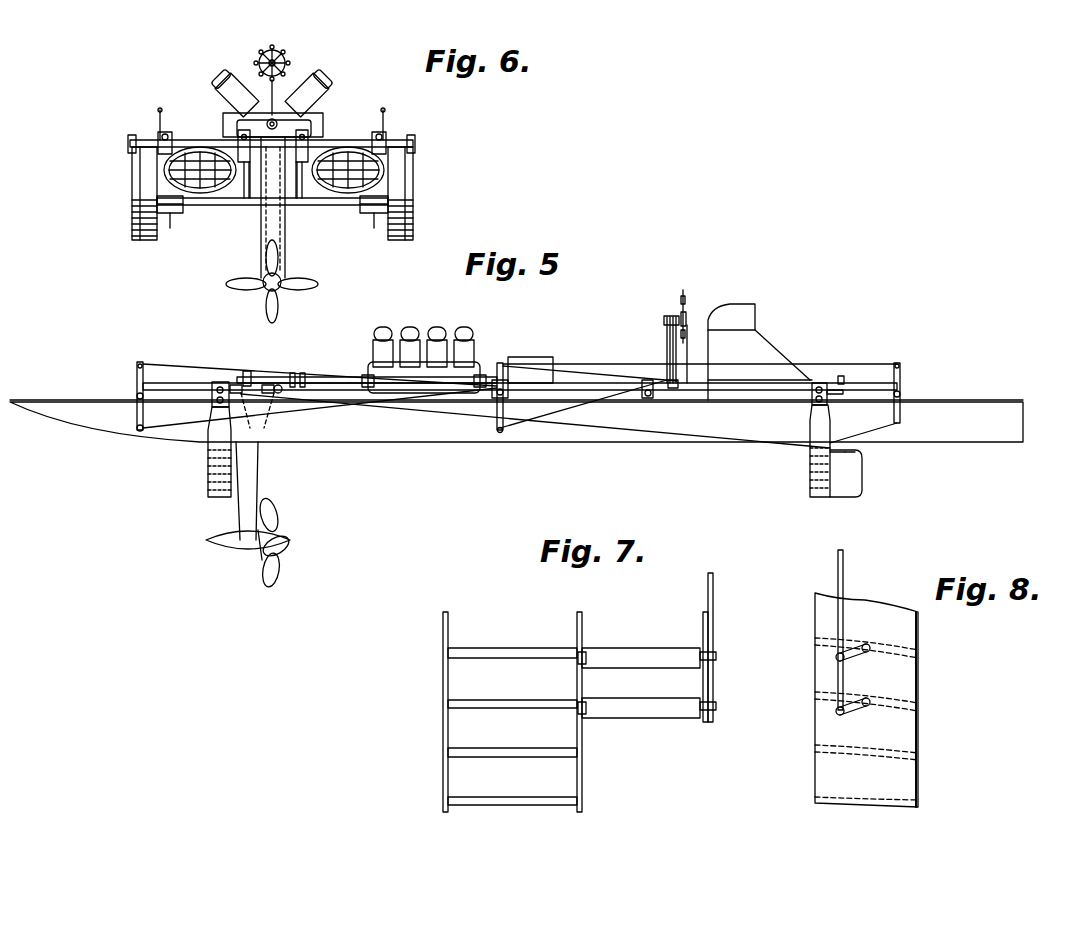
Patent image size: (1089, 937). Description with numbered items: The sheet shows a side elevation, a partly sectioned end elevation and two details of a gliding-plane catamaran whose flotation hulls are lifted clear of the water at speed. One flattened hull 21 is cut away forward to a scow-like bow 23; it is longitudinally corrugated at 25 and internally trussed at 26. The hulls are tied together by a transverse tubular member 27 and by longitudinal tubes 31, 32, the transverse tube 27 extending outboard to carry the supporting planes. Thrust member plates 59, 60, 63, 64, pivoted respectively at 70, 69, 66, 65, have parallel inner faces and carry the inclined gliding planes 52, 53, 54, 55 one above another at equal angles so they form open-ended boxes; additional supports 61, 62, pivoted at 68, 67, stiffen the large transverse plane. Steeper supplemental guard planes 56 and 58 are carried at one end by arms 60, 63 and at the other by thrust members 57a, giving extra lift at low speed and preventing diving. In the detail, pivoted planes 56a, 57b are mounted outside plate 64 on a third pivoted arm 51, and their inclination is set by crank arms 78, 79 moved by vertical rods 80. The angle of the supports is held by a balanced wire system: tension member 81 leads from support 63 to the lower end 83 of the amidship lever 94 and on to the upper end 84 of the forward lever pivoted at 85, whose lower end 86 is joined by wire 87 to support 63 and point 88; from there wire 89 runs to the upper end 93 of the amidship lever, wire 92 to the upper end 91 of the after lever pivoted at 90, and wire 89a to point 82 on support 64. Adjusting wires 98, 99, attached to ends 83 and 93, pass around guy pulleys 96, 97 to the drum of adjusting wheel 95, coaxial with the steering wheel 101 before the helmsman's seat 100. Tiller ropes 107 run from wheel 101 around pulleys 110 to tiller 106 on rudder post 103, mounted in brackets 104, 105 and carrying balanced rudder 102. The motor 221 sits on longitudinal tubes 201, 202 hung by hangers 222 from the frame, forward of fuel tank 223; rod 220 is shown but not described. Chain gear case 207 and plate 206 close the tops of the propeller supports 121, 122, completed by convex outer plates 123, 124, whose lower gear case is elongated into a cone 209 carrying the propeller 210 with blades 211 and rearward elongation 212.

In FIG. 5, the hull 21 is at (430, 404).
In FIG. 5, the scow-like bow 23 is at (70, 431).
In FIG. 6, the longitudinal corrugations 25 is at (272, 180).
In FIG. 6, the internal trussing 26 is at (198, 158).
In FIG. 6, the transverse member 27 is at (330, 140).
In FIG. 6, the longitudinal member 31 is at (388, 128).
In FIG. 5, the longitudinal member 31 is at (752, 392).
In FIG. 6, the longitudinal member 32 is at (165, 120).
In FIG. 7, the pivoted arm 51 is at (703, 627).
In FIG. 7, the gliding plane 52 is at (540, 790).
In FIG. 8, the gliding plane 52 is at (905, 800).
In FIG. 7, the gliding plane 53 is at (496, 752).
In FIG. 8, the gliding plane 53 is at (905, 748).
In FIG. 7, the gliding plane 54 is at (492, 702).
In FIG. 8, the gliding plane 54 is at (905, 698).
In FIG. 7, the gliding plane 55 is at (500, 650).
In FIG. 8, the gliding plane 55 is at (905, 646).
In FIG. 6, the supplemental plane 56 is at (172, 226).
In FIG. 7, the pivoted plane 56a is at (620, 705).
In FIG. 6, the thrust member 57a is at (183, 208).
In FIG. 7, the pivoted plane 57b is at (635, 642).
In FIG. 6, the supplemental plane 58 is at (298, 205).
In FIG. 6, the thrust member plate 59 is at (132, 183).
In FIG. 6, the thrust member arm 60 is at (148, 193).
In FIG. 6, the additional support 61 is at (253, 180).
In FIG. 6, the additional support 62 is at (293, 180).
In FIG. 6, the thrust member arm 63 is at (400, 193).
In FIG. 7, the thrust member arm 63 is at (450, 643).
In FIG. 6, the thrust member plate 64 is at (413, 185).
In FIG. 5, the thrust member plate 64 is at (212, 478).
In FIG. 7, the thrust member plate 64 is at (577, 628).
In FIG. 6, the pivot 65 is at (414, 146).
In FIG. 6, the pivot 66 is at (385, 148).
In FIG. 6, the pivot 67 is at (295, 149).
In FIG. 6, the pivot 68 is at (250, 149).
In FIG. 6, the pivot 69 is at (162, 150).
In FIG. 6, the pivot 70 is at (130, 147).
In FIG. 7, the crank arm 78 is at (717, 657).
In FIG. 8, the crank arm 78 is at (852, 655).
In FIG. 7, the crank arm 79 is at (717, 706).
In FIG. 8, the crank arm 79 is at (852, 712).
In FIG. 7, the vertical rod 80 is at (714, 600).
In FIG. 8, the vertical rod 80 is at (846, 582).
In FIG. 5, the tension member 81 is at (400, 436).
In FIG. 5, the connection point 82 is at (814, 450).
In FIG. 5, the lower end of amidship lever 83 is at (492, 439).
In FIG. 5, the upper end of forward lever 84 is at (142, 358).
In FIG. 5, the pivot 85 is at (136, 396).
In FIG. 5, the lower end of forward lever 86 is at (136, 428).
In FIG. 5, the wire 87 is at (175, 440).
In FIG. 5, the connection point 88 is at (214, 455).
In FIG. 5, the wire 89 is at (320, 413).
In FIG. 5, the wire 89a is at (888, 432).
In FIG. 5, the pivot 90 is at (900, 394).
In FIG. 5, the upper end of after lever 91 is at (899, 365).
In FIG. 5, the wire 92 is at (700, 353).
In FIG. 5, the upper end of amidship lever 93 is at (503, 365).
In FIG. 5, the amidship arm 94 is at (503, 398).
In FIG. 6, the adjusting wheel 95 is at (259, 50).
In FIG. 5, the adjusting wheel 95 is at (680, 309).
In FIG. 5, the guy pulley 96 is at (676, 388).
In FIG. 5, the guy pulley 97 is at (672, 386).
In FIG. 5, the adjusting wire 98 is at (585, 404).
In FIG. 5, the adjusting wire 99 is at (603, 374).
In FIG. 5, the helmsman's seat 100 is at (759, 365).
In FIG. 5, the steering wheel 101 is at (692, 308).
In FIG. 5, the balanced rudder 102 is at (855, 494).
In FIG. 5, the rudder post 103 is at (852, 460).
In FIG. 5, the bracket 104 is at (846, 453).
In FIG. 5, the bracket 105 is at (830, 398).
In FIG. 5, the tiller 106 is at (844, 380).
In FIG. 5, the tiller rope 107 is at (720, 378).
In FIG. 5, the guy pulley 110 is at (687, 375).
In FIG. 6, the propeller support 121 is at (287, 263).
In FIG. 5, the propeller support 121 is at (256, 482).
In FIG. 6, the propeller support 122 is at (264, 263).
In FIG. 6, the outer convex plate 123 is at (261, 236).
In FIG. 6, the outer convex plate 124 is at (287, 236).
In FIG. 6, the longitudinal steel tube 201 is at (312, 120).
In FIG. 6, the longitudinal steel tube 202 is at (228, 120).
In FIG. 5, the top plate 206 is at (252, 397).
In FIG. 5, the chain gear case 207 is at (247, 371).
In FIG. 6, the cone 209 is at (270, 288).
In FIG. 5, the cone 209 is at (216, 545).
In FIG. 5, the propeller 210 is at (275, 555).
In FIG. 6, the propeller blade 211 is at (238, 286).
In FIG. 5, the propeller blade 211 is at (277, 510).
In FIG. 5, the rearward elongation 212 is at (288, 541).
In FIG. 5, the rod 220 is at (320, 377).
In FIG. 6, the motor 221 is at (290, 96).
In FIG. 5, the motor 221 is at (424, 360).
In FIG. 5, the hanger 222 is at (366, 376).
In FIG. 6, the fuel tank 223 is at (232, 94).
In FIG. 5, the fuel tank 223 is at (530, 370).